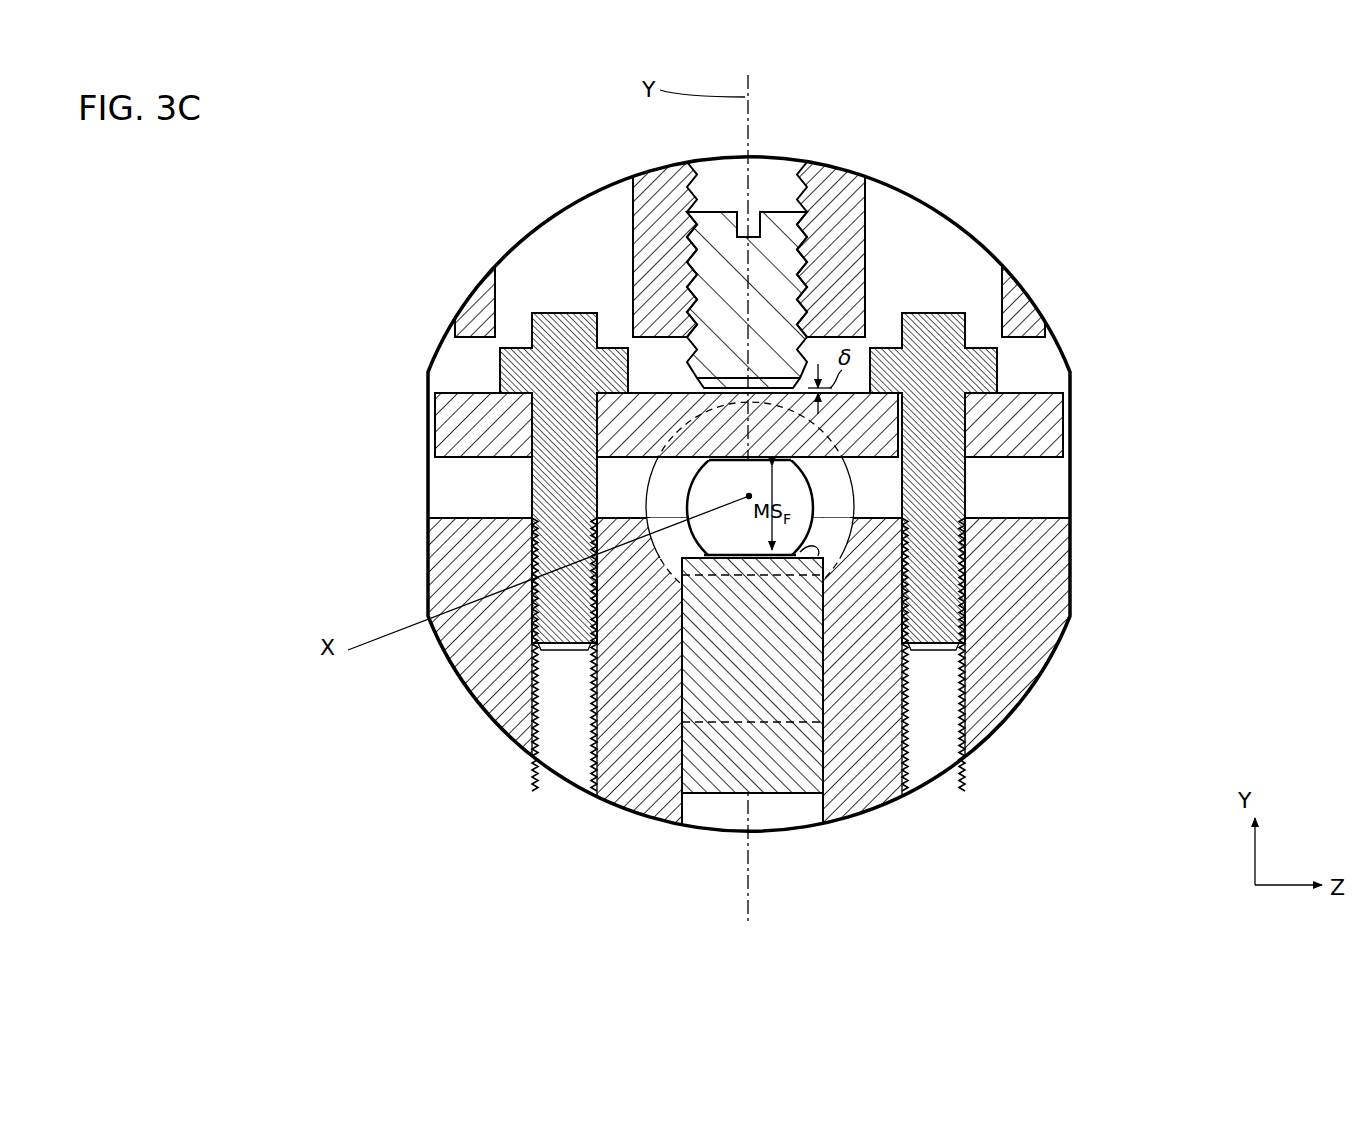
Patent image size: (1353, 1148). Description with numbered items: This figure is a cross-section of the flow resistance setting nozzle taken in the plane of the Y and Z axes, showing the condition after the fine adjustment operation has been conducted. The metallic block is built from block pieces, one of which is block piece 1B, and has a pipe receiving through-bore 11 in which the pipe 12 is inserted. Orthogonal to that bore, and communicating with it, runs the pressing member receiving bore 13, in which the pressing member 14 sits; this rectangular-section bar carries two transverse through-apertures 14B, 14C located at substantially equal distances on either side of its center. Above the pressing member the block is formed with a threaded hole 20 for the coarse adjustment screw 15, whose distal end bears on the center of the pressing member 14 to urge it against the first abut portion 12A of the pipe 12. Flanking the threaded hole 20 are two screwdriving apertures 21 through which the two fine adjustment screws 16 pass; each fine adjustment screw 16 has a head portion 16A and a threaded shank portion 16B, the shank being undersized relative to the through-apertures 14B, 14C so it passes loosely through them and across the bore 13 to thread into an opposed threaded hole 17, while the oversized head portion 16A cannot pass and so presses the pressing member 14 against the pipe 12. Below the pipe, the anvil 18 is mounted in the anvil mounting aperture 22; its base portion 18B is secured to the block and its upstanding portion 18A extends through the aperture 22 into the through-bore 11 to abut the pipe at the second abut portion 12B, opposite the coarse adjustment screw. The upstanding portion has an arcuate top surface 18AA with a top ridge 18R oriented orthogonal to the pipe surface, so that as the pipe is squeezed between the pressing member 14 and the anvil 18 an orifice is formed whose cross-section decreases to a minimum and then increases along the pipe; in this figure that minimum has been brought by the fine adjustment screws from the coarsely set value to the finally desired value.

The block piece 1B is at (703, 112).
The pipe receiving through-bore 11 is at (640, 478).
The pipe 12 is at (675, 510).
The first abut portion 12A is at (725, 437).
The second abut portion 12B is at (733, 560).
The pressing member receiving bore 13 is at (1027, 517).
The pressing member 14 is at (784, 321).
The transverse through-aperture 14B is at (520, 416).
The transverse through-aperture 14C is at (975, 413).
The coarse adjustment screw 15 is at (775, 233).
The fine adjustment screw 16 is at (677, 364).
The head portion 16A is at (565, 313).
The threaded shank portion 16B is at (532, 498).
The threaded hole 17 is at (545, 732).
The anvil 18 is at (882, 732).
The upstanding portion 18A is at (782, 673).
The arcuate top surface 18AA is at (805, 552).
The base portion 18B is at (777, 778).
The top ridge 18R is at (823, 557).
The threaded hole 20 is at (703, 213).
The screwdriving aperture 21 is at (633, 227).
The anvil mounting aperture 22 is at (690, 808).